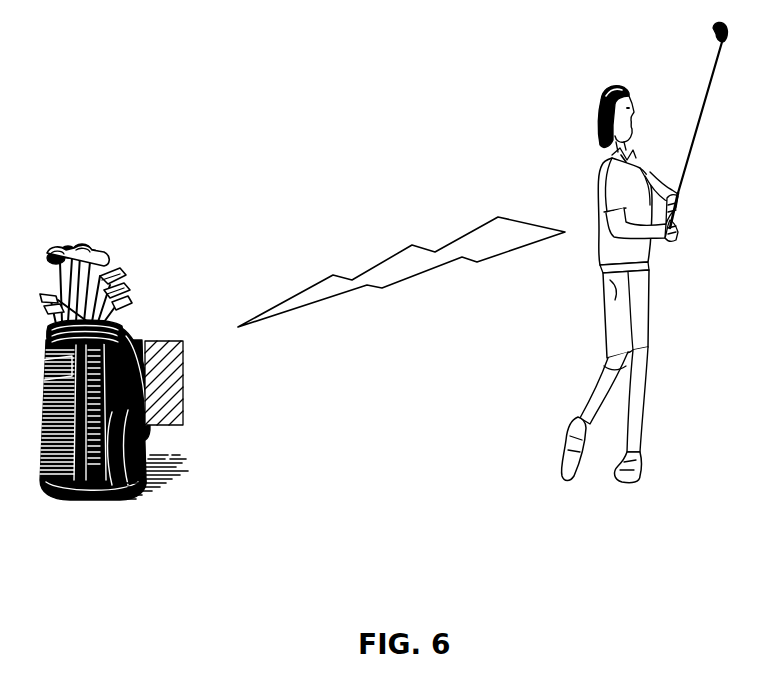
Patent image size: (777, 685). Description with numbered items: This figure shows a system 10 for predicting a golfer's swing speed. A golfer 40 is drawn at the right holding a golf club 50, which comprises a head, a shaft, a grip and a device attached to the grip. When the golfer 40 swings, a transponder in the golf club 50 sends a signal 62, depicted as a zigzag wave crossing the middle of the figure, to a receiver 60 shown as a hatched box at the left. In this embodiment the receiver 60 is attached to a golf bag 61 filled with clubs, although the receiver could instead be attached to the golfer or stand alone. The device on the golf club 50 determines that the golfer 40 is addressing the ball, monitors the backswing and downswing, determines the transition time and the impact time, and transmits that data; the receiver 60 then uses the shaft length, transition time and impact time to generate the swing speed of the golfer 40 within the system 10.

The system for predicting a golfer's swing speed 10 is at (331, 145).
The golfer 40 is at (622, 82).
The golf club 50 is at (706, 125).
The receiver 60 is at (180, 413).
The golf bag 61 is at (111, 238).
The signal 62 is at (477, 262).